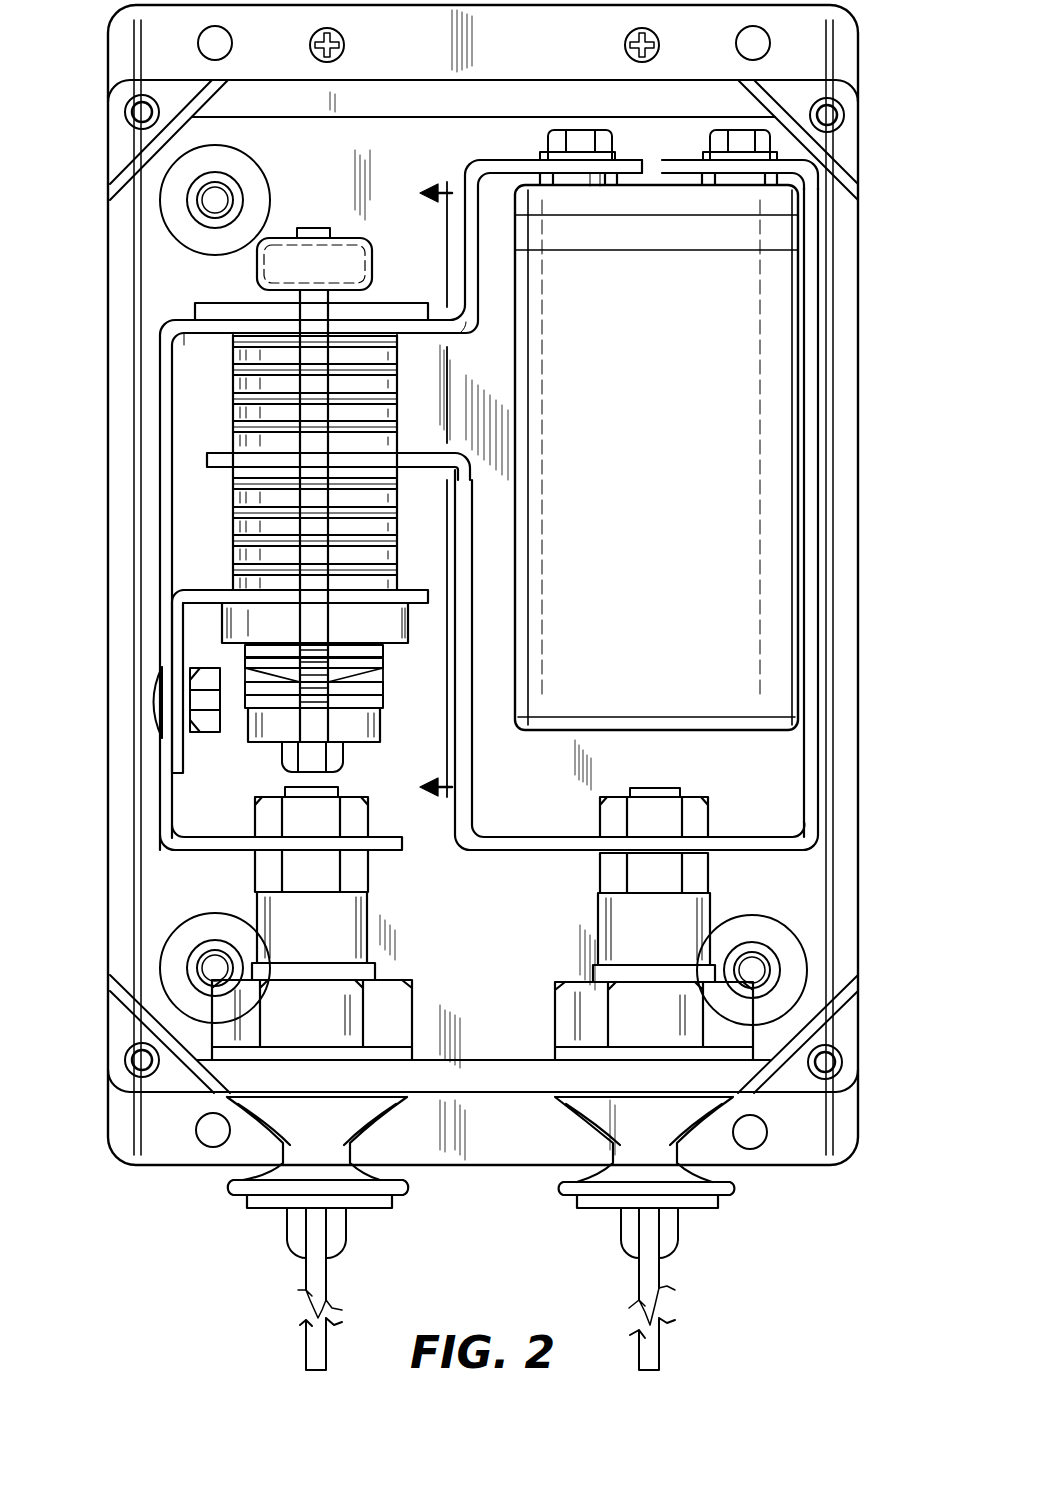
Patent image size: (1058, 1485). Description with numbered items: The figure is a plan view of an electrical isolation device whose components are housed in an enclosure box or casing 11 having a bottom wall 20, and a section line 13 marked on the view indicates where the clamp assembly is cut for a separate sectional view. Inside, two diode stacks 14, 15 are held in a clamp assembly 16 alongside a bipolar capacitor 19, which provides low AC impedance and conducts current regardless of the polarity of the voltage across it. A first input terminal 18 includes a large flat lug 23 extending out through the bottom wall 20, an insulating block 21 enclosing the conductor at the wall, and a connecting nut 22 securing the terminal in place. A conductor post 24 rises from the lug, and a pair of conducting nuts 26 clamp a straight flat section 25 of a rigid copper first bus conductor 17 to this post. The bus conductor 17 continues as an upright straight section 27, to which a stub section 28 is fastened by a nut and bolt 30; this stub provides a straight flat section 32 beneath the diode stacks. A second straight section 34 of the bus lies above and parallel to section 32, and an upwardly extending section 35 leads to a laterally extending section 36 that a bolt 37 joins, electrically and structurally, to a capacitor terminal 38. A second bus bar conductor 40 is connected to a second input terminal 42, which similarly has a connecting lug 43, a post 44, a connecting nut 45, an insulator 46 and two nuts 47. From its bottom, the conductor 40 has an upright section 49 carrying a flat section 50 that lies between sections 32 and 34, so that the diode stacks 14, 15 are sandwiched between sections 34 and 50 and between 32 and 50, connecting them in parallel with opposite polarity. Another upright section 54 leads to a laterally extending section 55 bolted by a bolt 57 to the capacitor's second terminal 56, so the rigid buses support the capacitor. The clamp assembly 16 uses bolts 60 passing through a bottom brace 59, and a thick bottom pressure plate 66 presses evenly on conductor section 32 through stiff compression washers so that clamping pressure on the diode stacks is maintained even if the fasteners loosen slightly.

The enclosure box or casing 11 is at (858, 423).
The section line 13 is at (420, 491).
The first diode stack 14 is at (233, 350).
The second diode stack 15 is at (233, 500).
The clamp assembly 16 is at (373, 277).
The first electrical connection bus 17 is at (483, 165).
The first input terminal 18 is at (258, 912).
The bipolar capacitor 19 is at (682, 400).
The bottom wall 20 is at (483, 1119).
The insulating block 21 is at (357, 915).
The connecting nut 22 is at (413, 1010).
The input lug 23 is at (307, 1345).
The conductor post 24 is at (338, 790).
The straight flat section 25 is at (243, 838).
The nuts 26 is at (367, 800).
The straight section 27 is at (155, 428).
The stub section 28 is at (185, 618).
The nut and bolt 30 is at (210, 737).
The straight flat section 32 is at (417, 587).
The second straight section 34 is at (187, 317).
The upwardly extending section 35 is at (470, 323).
The laterally extending section 36 is at (535, 167).
The bolt 37 is at (607, 137).
The capacitor terminal 38 is at (595, 177).
The second bus bar conductor 40 is at (835, 682).
The second input terminal 42 is at (725, 908).
The connecting lug 43 is at (675, 1258).
The post 44 is at (637, 785).
The connecting nut 45 is at (555, 1012).
The insulator 46 is at (597, 910).
The nuts 47 is at (597, 812).
The upright section 49 is at (467, 603).
The flat section 50 is at (430, 437).
The upright section 54 is at (805, 745).
The laterally extending section 55 is at (686, 172).
The second capacitor terminal 56 is at (768, 182).
The bolt 57 is at (763, 140).
The bottom brace 59 is at (382, 735).
The bolts 60 is at (190, 320).
The bottom pressure plate 66 is at (383, 662).